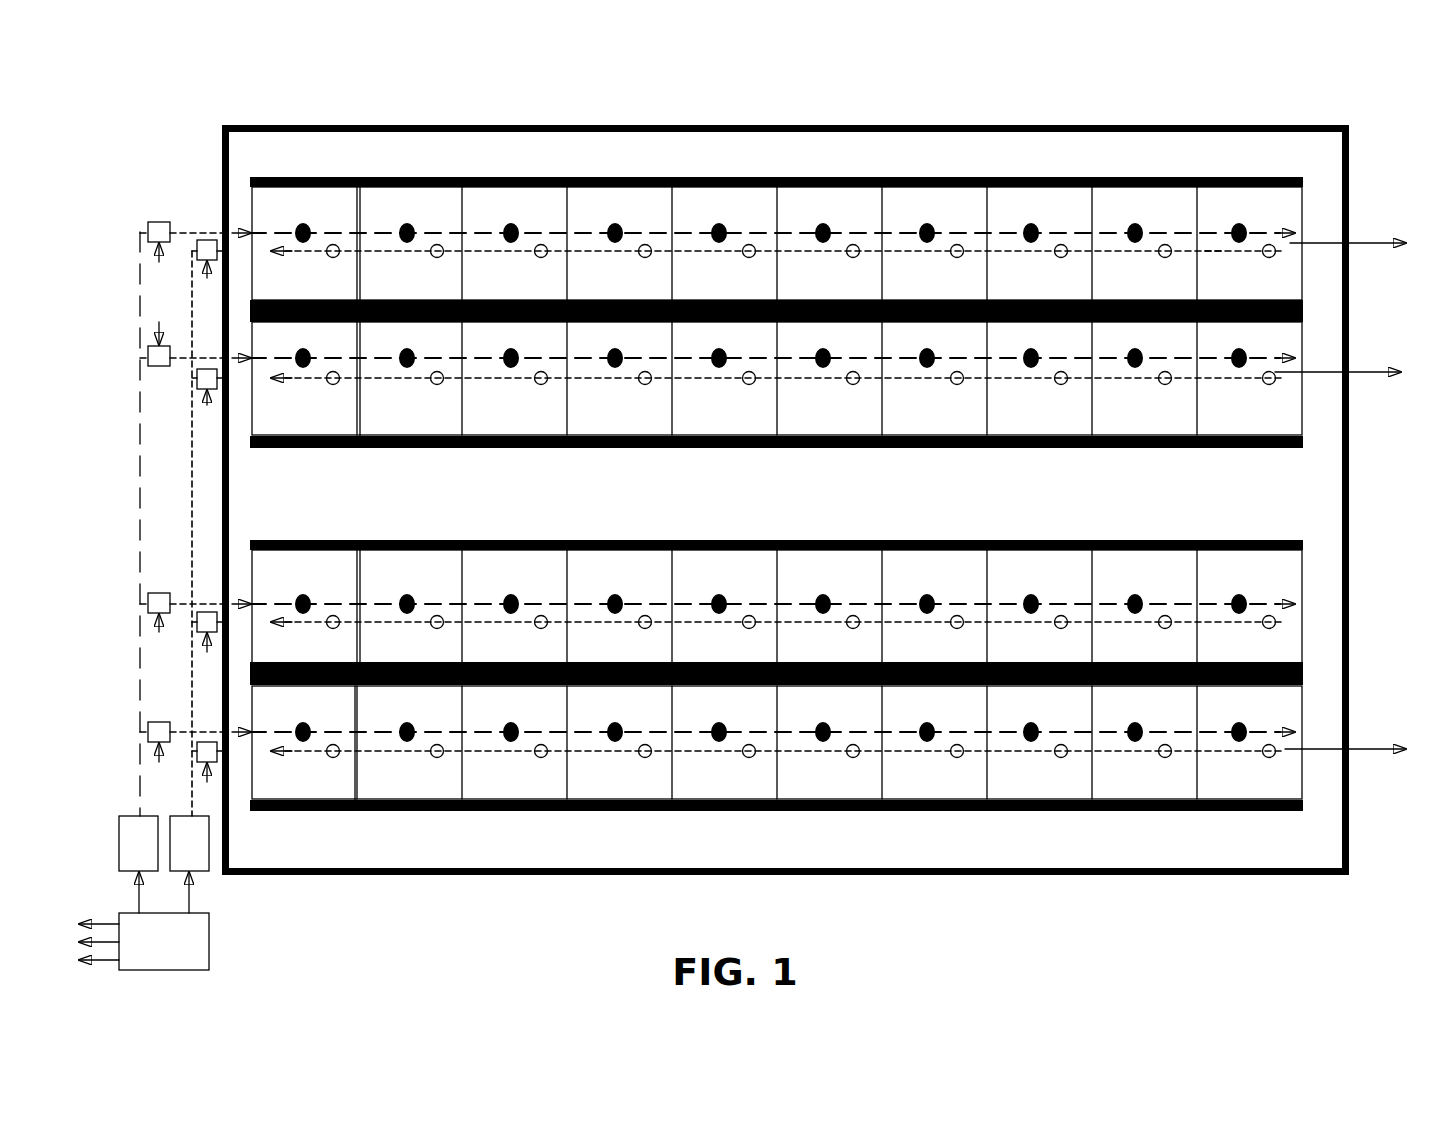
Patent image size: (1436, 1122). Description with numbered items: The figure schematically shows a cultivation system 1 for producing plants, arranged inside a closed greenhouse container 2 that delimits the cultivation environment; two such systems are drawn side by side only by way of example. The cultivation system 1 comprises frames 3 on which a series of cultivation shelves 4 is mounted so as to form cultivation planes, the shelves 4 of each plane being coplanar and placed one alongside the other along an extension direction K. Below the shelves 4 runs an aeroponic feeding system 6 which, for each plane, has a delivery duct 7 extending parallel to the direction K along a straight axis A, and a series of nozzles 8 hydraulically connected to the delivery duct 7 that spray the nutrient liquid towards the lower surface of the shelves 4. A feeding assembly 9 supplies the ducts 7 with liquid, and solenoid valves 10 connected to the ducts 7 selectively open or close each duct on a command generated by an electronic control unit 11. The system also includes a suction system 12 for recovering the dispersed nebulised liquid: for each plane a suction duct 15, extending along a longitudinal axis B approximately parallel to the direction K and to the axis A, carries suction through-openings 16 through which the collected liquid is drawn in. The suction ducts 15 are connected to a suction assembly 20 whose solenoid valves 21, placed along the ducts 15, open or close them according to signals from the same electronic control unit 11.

The cultivation system 1 is at (1065, 150).
The greenhouse container 2 is at (1193, 876).
The frame 3 is at (1305, 182).
The cultivation shelf 4 is at (290, 210).
The aeroponic feeding system 6 is at (120, 805).
The delivery duct 7 is at (365, 250).
The nozzle 8 is at (511, 225).
The feeding assembly 9 is at (138, 843).
The solenoid valve 10 is at (160, 221).
The electronic control unit 11 is at (144, 941).
The suction system 12 is at (212, 878).
The suction duct 15 is at (708, 247).
The suction through-opening 16 is at (544, 244).
The suction assembly 20 is at (189, 843).
The solenoid valve 21 is at (207, 240).
The axis A is at (1265, 232).
The longitudinal axis B is at (1213, 258).
The extension direction K is at (1400, 243).